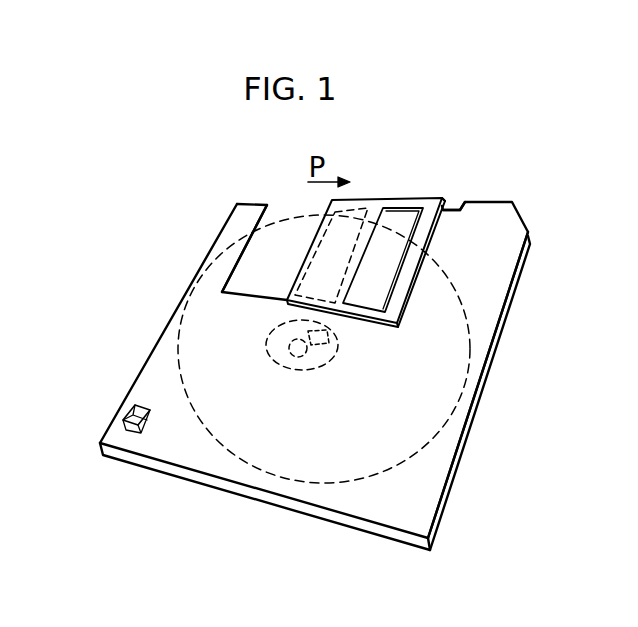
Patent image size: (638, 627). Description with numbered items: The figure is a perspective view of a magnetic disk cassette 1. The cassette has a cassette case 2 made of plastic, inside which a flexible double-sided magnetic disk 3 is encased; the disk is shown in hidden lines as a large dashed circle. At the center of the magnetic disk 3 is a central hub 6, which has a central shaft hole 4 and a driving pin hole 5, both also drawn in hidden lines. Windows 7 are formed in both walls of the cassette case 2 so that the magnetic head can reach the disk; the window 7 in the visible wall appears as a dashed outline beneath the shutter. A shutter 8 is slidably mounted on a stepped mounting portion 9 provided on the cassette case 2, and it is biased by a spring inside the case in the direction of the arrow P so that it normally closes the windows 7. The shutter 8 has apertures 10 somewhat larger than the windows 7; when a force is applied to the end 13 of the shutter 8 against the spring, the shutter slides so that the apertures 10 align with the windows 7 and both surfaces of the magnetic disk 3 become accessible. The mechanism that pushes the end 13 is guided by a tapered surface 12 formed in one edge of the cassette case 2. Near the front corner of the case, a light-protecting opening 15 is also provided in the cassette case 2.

The magnetic disk cassette 1 is at (190, 473).
The cassette case 2 is at (498, 325).
The magnetic disk 3 is at (435, 425).
The central shaft hole 4 is at (296, 356).
The driving pin hole 5 is at (322, 360).
The central hub 6 is at (266, 343).
The window 7 is at (357, 232).
The shutter 8 is at (358, 200).
The stepped mounting portion 9 is at (282, 212).
The aperture 10 is at (412, 220).
The tapered surface 12 is at (463, 205).
The end of the shutter 13 is at (441, 201).
The light-protecting opening 15 is at (128, 418).